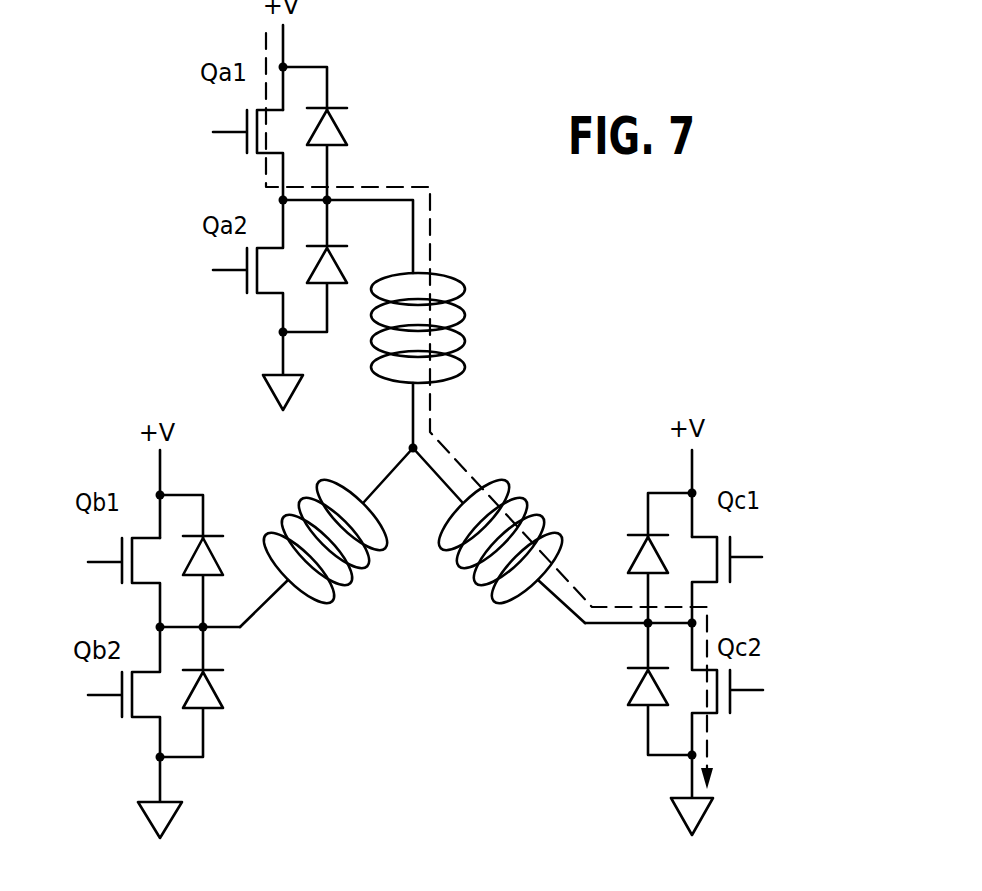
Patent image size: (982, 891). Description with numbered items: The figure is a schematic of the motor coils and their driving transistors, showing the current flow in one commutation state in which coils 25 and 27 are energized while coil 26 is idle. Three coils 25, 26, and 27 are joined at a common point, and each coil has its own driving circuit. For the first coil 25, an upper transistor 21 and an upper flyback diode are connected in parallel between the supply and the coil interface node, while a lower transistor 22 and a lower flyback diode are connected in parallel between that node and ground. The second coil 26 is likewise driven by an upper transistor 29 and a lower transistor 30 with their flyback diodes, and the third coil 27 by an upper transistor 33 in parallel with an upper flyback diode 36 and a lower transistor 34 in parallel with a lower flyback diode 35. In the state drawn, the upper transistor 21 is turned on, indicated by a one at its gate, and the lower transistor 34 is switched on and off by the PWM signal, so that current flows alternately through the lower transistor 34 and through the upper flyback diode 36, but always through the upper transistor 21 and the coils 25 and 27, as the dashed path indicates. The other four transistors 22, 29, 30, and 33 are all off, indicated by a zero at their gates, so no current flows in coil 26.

The upper transistor 21 is at (245, 142).
The lower transistor 22 is at (245, 282).
The coil 25 is at (463, 293).
The coil 26 is at (340, 587).
The coil 27 is at (530, 500).
The upper transistor 29 is at (117, 557).
The lower transistor 30 is at (120, 708).
The upper transistor 33 is at (732, 557).
The lower transistor 34 is at (732, 707).
The lower flyback diode 35 is at (637, 685).
The upper flyback diode 36 is at (630, 563).